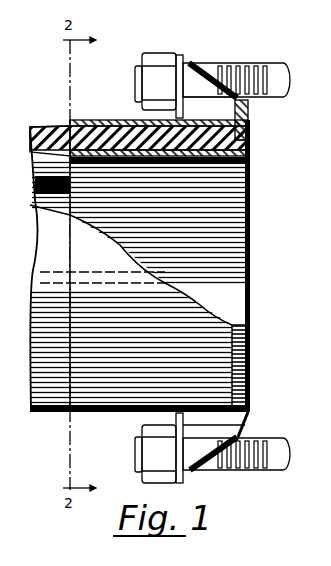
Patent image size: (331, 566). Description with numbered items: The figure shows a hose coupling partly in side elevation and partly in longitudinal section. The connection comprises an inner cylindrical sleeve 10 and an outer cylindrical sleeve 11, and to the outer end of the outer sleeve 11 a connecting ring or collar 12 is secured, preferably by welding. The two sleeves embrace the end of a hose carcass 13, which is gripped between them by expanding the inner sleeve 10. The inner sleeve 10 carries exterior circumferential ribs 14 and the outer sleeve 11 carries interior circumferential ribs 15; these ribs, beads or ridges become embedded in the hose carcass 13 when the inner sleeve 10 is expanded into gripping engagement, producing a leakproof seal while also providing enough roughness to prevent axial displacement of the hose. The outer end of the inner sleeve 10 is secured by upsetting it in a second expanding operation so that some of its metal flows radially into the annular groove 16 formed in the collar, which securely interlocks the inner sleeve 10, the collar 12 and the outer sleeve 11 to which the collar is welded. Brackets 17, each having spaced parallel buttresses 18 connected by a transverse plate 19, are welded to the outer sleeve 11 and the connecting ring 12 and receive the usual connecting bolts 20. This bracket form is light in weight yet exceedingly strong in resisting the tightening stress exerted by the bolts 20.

The inner cylindrical sleeve 10 is at (128, 172).
The outer cylindrical sleeve 11 is at (106, 122).
The connecting ring or collar 12 is at (252, 102).
The hose carcass 13 is at (62, 126).
The exterior circumferential ribs 14 is at (138, 172).
The interior circumferential ribs 15 is at (136, 126).
The annular groove 16 is at (252, 137).
The bracket 17 is at (178, 62).
The buttress 18 is at (204, 100).
The transverse plate 19 is at (200, 62).
The connecting bolt 20 is at (274, 70).